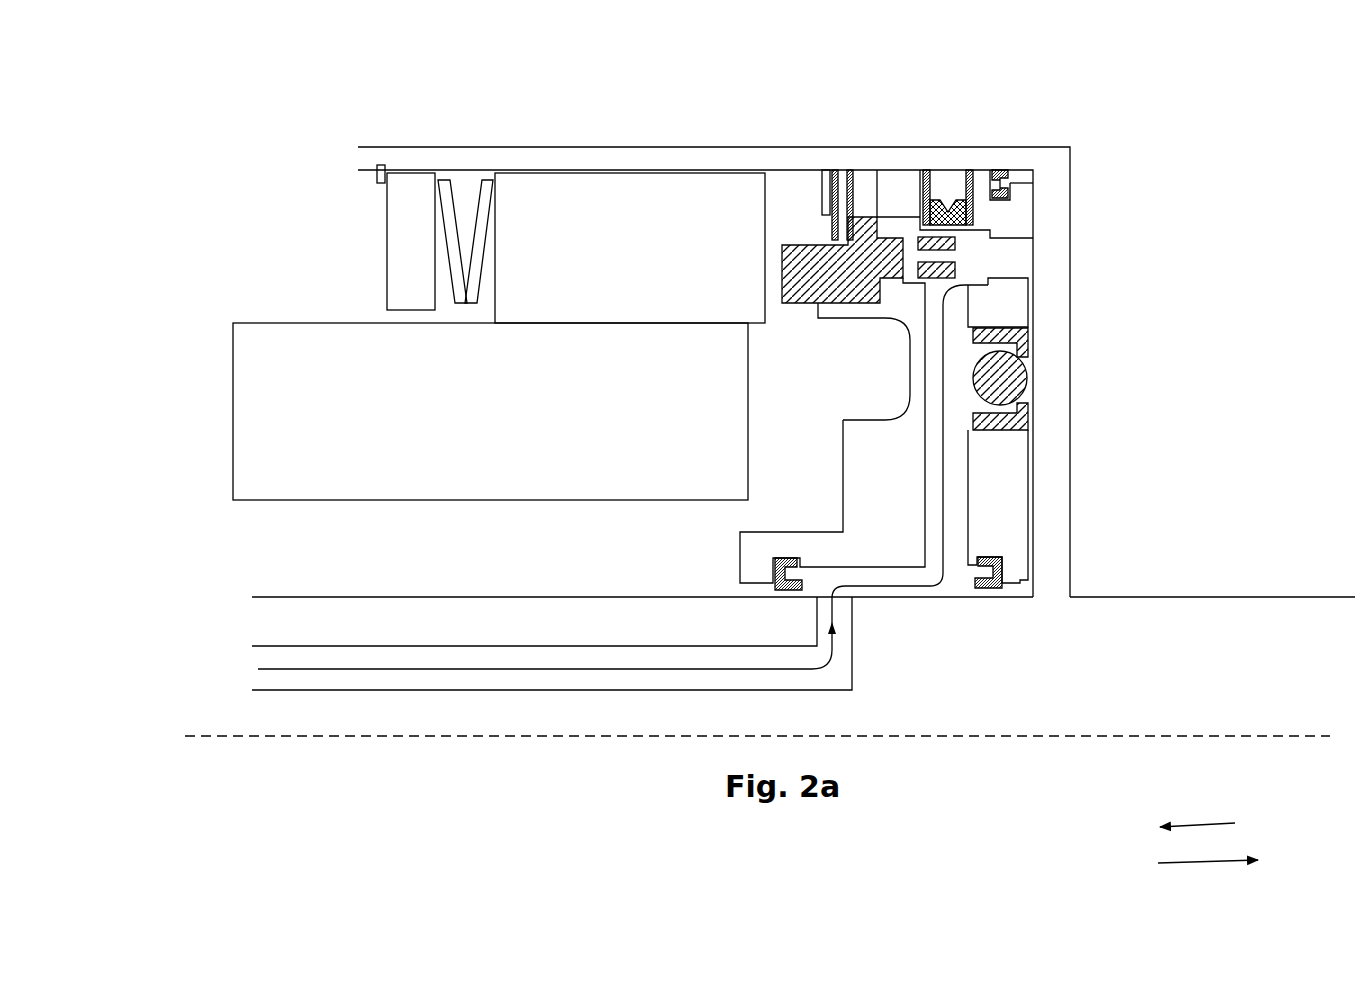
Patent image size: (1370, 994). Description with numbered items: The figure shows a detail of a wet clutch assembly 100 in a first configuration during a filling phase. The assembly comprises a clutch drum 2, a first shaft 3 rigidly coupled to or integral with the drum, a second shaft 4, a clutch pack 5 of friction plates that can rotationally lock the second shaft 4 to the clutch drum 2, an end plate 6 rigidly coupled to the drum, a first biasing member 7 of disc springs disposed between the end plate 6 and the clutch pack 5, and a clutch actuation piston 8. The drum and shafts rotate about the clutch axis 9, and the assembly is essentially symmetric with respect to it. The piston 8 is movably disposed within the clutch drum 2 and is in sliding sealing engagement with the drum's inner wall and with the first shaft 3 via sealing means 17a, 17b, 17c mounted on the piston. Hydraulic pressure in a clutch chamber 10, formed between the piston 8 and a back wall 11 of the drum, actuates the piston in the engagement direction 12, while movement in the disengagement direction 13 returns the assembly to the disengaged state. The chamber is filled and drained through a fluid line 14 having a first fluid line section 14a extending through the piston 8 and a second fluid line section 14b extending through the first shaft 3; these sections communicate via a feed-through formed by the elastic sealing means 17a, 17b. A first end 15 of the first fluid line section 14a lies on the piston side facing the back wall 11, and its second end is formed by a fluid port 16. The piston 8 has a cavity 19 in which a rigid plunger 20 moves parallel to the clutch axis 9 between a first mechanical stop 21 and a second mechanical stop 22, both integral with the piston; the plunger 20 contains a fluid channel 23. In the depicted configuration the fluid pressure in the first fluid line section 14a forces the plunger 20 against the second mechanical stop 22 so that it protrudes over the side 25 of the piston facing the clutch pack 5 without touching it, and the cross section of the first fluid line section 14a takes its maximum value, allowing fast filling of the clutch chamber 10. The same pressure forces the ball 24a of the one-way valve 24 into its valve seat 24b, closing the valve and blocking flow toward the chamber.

The clutch assembly 100 is at (247, 140).
The clutch drum 2 is at (1070, 197).
The first shaft 3 is at (1200, 673).
The second shaft 4 is at (306, 428).
The clutch pack 5 is at (636, 268).
The end plate 6 is at (421, 258).
The first biasing member 7 is at (465, 316).
The clutch actuation piston 8 is at (740, 555).
The clutch axis 9 is at (215, 730).
The clutch chamber 10 is at (1034, 305).
The back wall 11 is at (1070, 548).
The engagement direction 12 is at (1212, 820).
The disengagement direction 13 is at (1240, 868).
The fluid line 14 is at (377, 643).
The first fluid line section 14a is at (937, 483).
The second fluid line section 14b is at (545, 643).
The first end 15 is at (1043, 258).
The fluid port 16 is at (894, 594).
The sealing means 17a is at (1007, 165).
The sealing means 17b is at (787, 593).
The sealing means 17c is at (982, 590).
The cavity 19 is at (902, 225).
The plunger 20 is at (800, 245).
The first mechanical stop 21 is at (925, 175).
The second mechanical stop 22 is at (827, 222).
The fluid channel 23 is at (912, 274).
The one-way valve 24 is at (1112, 365).
The ball 24a is at (1030, 380).
The valve seat 24b is at (1030, 345).
The side 25 is at (818, 307).